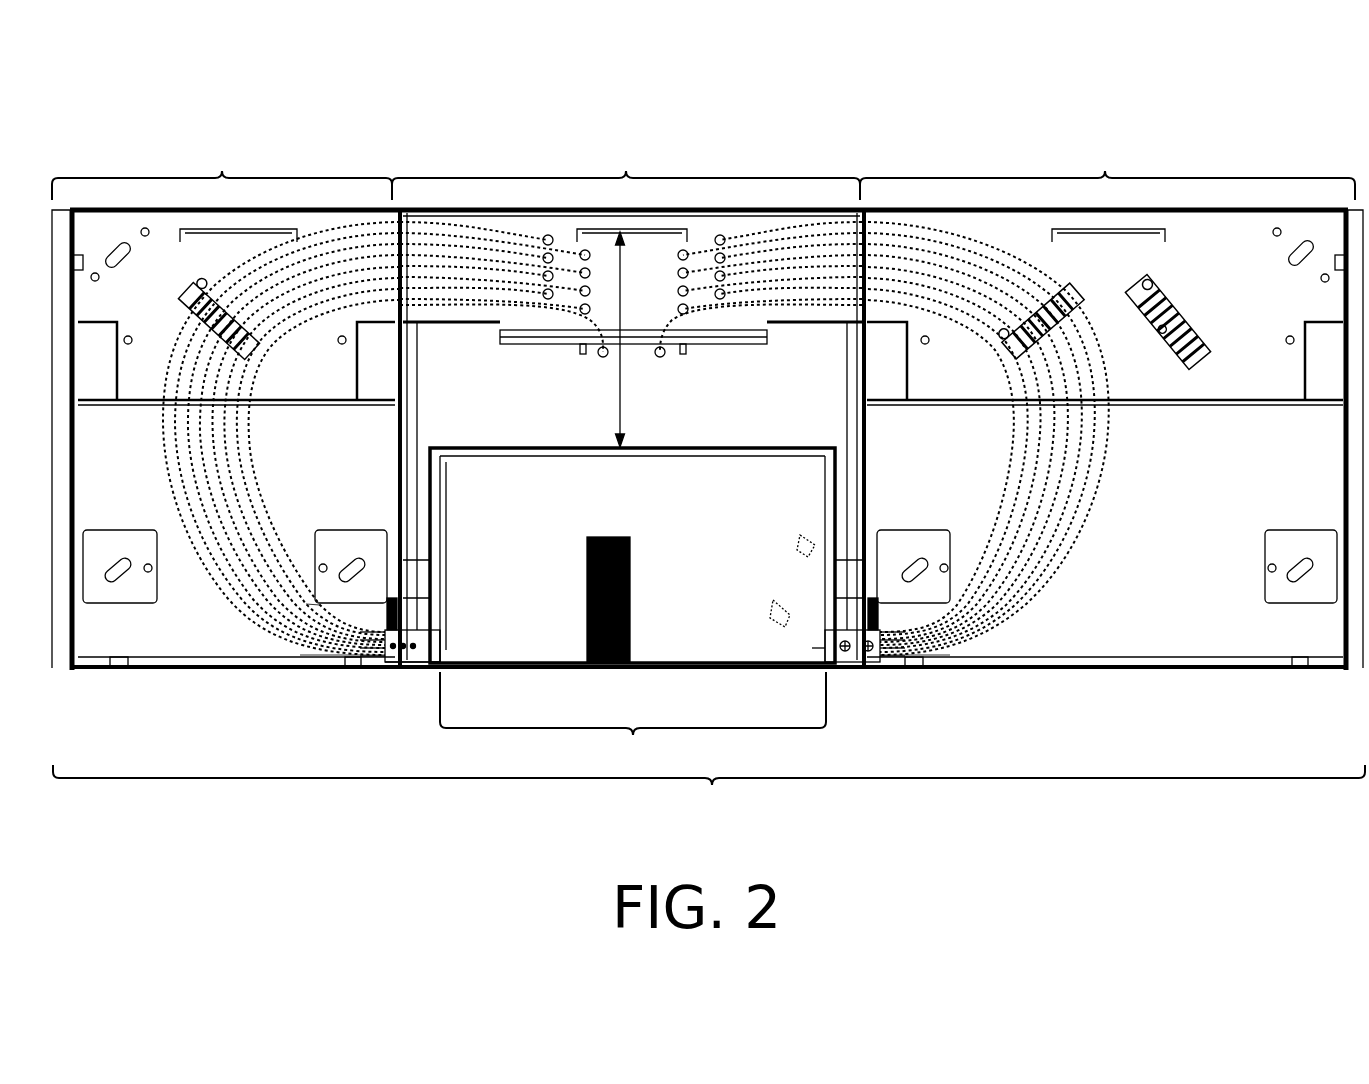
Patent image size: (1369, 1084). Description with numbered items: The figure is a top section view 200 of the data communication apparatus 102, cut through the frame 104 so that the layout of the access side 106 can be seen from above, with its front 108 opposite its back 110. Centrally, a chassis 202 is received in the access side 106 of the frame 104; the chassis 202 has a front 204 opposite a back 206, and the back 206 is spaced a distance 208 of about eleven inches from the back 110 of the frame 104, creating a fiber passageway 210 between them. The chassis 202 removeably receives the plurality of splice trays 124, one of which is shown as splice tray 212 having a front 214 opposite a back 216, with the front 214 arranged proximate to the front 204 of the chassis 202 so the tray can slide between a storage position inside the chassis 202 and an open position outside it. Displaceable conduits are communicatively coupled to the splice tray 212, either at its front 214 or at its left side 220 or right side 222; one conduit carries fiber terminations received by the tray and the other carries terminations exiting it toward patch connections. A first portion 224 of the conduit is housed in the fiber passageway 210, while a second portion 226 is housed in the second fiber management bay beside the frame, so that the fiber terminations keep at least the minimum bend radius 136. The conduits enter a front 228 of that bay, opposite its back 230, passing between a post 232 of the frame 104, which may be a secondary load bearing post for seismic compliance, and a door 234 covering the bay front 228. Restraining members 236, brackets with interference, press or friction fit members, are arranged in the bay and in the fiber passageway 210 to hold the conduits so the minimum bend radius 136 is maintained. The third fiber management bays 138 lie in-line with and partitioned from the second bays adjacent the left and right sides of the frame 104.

The data communication apparatus 102 is at (97, 121).
The frame 104 is at (628, 408).
The access side 106 is at (584, 692).
The front 108 is at (846, 689).
The back 110 is at (620, 232).
The splice trays 124 is at (633, 737).
The minimum bend radius 136 is at (273, 356).
The third fiber management bays 138 is at (703, 376).
The top section view 200 is at (709, 788).
The chassis 202 is at (628, 447).
The front 204 is at (386, 662).
The back 206 is at (428, 448).
The distance 208 is at (618, 356).
The fiber passageway 210 is at (637, 330).
The splice tray 212 is at (621, 528).
The front 214 is at (447, 660).
The back 216 is at (447, 455).
The left side 220 is at (440, 640).
The right side 222 is at (825, 640).
The first portion 224 is at (513, 307).
The second portion 226 is at (265, 430).
The front 228 is at (268, 641).
The back 230 is at (246, 242).
The post 232 is at (416, 630).
The door 234 is at (163, 668).
The restraining member 236 is at (190, 293).